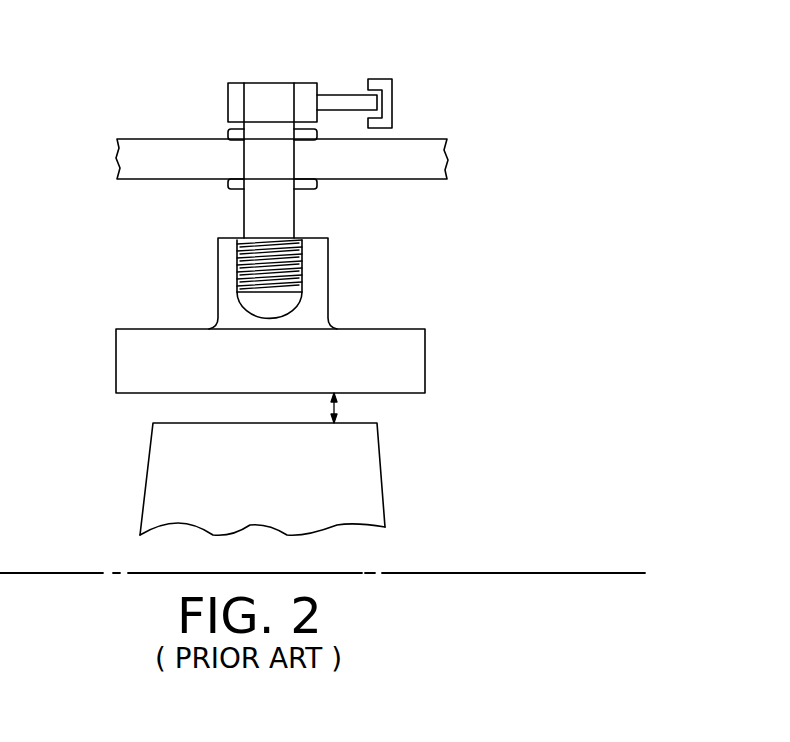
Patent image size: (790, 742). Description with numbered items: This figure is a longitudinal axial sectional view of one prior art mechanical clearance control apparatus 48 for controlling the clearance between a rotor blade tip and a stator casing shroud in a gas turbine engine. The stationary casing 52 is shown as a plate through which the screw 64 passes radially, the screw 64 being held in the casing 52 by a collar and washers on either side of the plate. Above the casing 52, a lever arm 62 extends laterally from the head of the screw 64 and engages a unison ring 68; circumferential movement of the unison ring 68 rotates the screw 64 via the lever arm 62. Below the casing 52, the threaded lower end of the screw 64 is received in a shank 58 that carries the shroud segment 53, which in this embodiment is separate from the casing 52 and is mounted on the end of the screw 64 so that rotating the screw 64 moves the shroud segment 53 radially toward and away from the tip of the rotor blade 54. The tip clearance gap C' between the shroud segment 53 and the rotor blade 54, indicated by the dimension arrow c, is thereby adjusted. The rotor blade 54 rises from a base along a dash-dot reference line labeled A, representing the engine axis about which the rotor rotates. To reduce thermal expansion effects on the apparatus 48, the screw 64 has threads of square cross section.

The clearance control apparatus 48 is at (581, 78).
The stationary casing 52 is at (421, 172).
The shroud segment 53 is at (303, 375).
The rotor blade 54 is at (276, 477).
The shank 58 is at (315, 258).
The lever arm 62 is at (354, 94).
The screw 64 is at (286, 172).
The unison ring 68 is at (390, 82).
The tip clearance gap C' c is at (337, 406).
The reference plane A is at (533, 571).